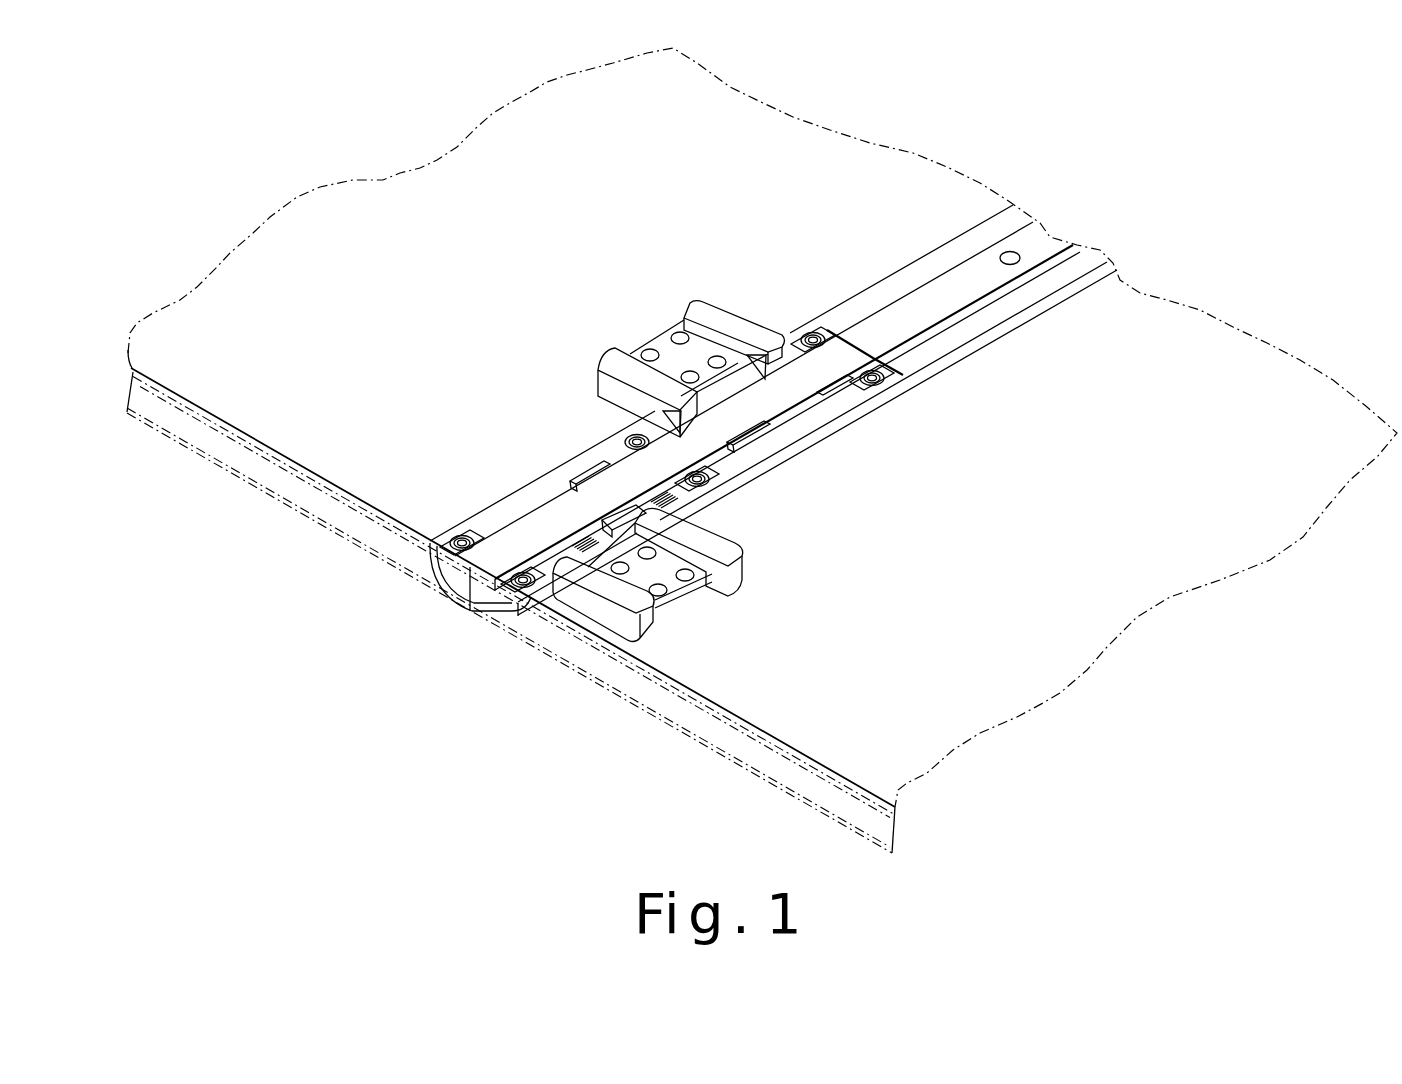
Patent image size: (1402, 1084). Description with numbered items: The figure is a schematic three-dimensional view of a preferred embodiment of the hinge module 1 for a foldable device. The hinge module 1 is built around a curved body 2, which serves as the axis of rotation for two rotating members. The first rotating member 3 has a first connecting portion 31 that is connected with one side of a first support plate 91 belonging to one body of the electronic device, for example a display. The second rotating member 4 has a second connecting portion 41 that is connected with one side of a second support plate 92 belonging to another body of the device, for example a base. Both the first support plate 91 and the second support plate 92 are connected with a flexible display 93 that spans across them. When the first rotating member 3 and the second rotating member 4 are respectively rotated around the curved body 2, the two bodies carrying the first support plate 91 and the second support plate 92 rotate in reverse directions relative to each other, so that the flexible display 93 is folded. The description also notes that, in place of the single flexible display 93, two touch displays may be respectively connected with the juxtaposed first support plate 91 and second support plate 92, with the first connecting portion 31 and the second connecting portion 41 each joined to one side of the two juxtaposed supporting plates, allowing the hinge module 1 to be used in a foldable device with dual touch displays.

The hinge module 1 is at (884, 238).
The curved body 2 is at (436, 582).
The first rotating member 3 is at (654, 650).
The first connecting portion 31 is at (606, 612).
The second rotating member 4 is at (583, 393).
The second connecting portion 41 is at (624, 363).
The first support plate 91 is at (560, 622).
The second support plate 92 is at (245, 437).
The flexible display 93 is at (1000, 680).